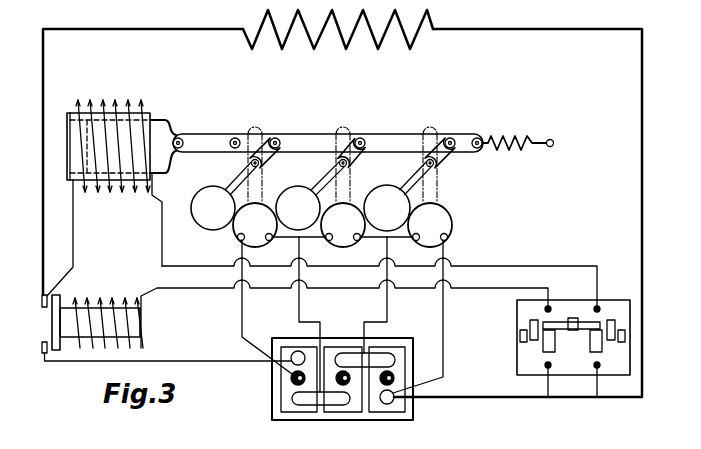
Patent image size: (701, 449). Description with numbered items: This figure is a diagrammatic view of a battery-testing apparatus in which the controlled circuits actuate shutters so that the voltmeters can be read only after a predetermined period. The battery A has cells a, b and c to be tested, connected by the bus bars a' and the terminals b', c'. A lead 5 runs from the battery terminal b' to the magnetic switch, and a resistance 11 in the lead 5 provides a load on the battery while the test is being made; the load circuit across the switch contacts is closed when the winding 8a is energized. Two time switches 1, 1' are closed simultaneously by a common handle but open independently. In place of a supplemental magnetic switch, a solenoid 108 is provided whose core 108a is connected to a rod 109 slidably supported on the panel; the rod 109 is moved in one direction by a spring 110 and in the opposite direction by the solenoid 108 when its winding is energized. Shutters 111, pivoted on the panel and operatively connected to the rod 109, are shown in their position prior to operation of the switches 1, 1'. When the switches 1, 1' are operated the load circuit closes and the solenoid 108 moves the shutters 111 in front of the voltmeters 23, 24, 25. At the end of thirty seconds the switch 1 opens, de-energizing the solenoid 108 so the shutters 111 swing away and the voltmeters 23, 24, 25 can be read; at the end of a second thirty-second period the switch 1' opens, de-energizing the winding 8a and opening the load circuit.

The lead 5 is at (643, 275).
The resistance 11 is at (373, 43).
The solenoid 108 is at (118, 197).
The core 108a is at (168, 169).
The rod 109 is at (313, 137).
The spring 110 is at (512, 150).
The shutters 111 is at (200, 221).
The voltmeter 23 is at (233, 238).
The voltmeter 24 is at (333, 242).
The voltmeter 25 is at (452, 229).
The winding 8a is at (113, 298).
The battery A is at (354, 387).
The cell a is at (277, 383).
The bus bars a' is at (365, 341).
The cell b is at (324, 417).
The terminal b' is at (389, 416).
The cell c is at (405, 367).
The terminal c' is at (290, 341).
The time switch 1 is at (573, 348).
The time switch 1' is at (524, 365).